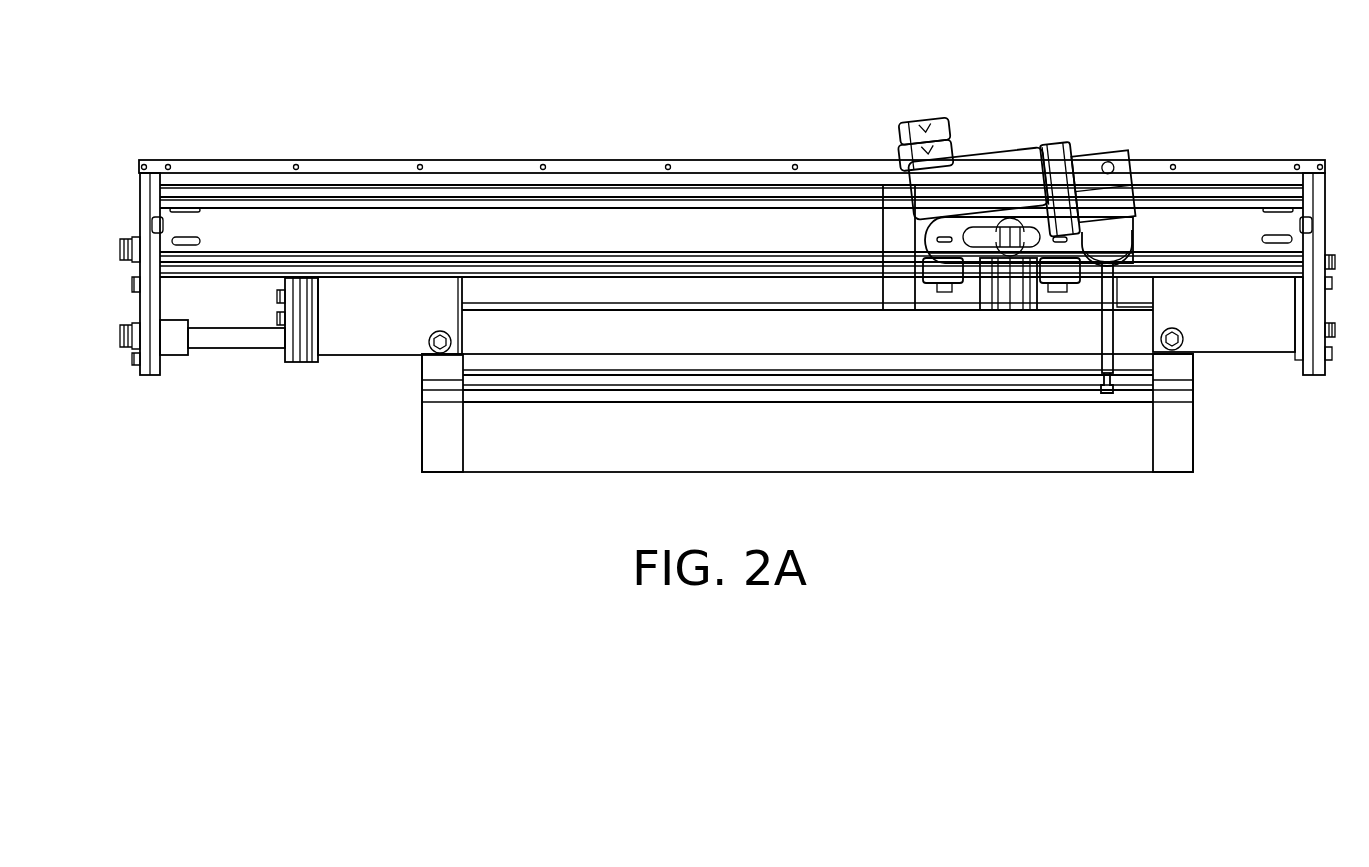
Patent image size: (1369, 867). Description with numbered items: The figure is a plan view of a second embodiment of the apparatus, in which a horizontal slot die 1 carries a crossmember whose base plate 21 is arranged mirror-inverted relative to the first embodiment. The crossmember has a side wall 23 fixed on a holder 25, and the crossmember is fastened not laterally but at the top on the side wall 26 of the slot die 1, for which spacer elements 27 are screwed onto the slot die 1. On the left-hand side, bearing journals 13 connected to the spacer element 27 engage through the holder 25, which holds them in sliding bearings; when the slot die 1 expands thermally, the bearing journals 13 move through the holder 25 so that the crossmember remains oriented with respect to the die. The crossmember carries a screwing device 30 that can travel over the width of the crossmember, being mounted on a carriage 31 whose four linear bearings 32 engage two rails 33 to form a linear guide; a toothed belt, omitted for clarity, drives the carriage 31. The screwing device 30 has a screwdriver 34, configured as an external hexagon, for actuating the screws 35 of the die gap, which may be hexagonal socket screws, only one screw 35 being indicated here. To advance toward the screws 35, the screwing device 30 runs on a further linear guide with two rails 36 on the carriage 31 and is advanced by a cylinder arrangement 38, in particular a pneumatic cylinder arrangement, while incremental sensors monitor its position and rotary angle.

The slot die 1 is at (547, 472).
The bearing journals 13 is at (212, 338).
The base plate 21 is at (374, 160).
The side wall 23 is at (145, 298).
The holder 25 is at (158, 357).
The side wall of the slot die 26 is at (437, 437).
The spacer elements 27 is at (350, 320).
The screwing device 30 is at (932, 105).
The carriage 31 is at (908, 272).
The linear bearings 32 is at (895, 185).
The rails 33 is at (474, 197).
The screwdriver 34 is at (1153, 295).
The screws 35 is at (1110, 378).
The rails 36 is at (935, 280).
The cylinder arrangement 38 is at (1010, 290).